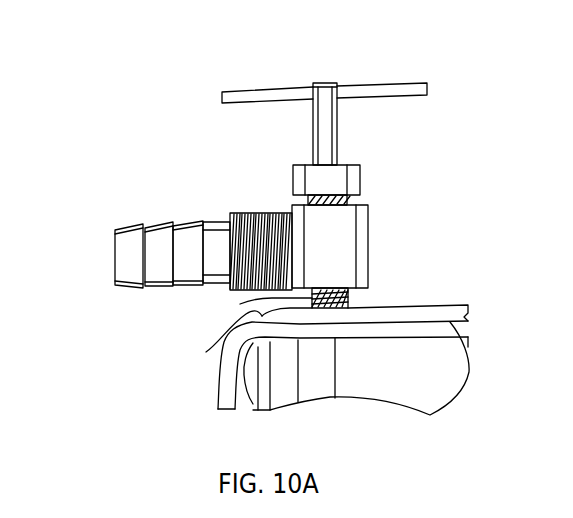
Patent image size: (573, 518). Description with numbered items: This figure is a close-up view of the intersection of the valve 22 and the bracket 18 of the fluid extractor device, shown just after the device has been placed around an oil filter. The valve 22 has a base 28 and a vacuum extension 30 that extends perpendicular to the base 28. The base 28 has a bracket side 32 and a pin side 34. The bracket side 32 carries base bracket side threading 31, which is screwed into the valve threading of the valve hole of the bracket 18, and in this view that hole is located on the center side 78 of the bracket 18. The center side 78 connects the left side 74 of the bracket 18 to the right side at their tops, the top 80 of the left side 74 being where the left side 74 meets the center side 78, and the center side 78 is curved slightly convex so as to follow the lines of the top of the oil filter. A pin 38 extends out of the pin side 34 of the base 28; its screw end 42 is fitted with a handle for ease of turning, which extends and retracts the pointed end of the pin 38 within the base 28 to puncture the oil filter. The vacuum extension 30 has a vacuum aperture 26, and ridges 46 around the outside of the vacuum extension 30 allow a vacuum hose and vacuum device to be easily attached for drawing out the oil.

The bracket 18 is at (437, 299).
The valve 22 is at (432, 125).
The vacuum aperture 26 is at (115, 265).
The base 28 is at (343, 243).
The vacuum extension 30 is at (182, 225).
The base bracket side threading 31 is at (240, 304).
The bracket side 32 is at (353, 296).
The pin side 34 is at (363, 198).
The pin 38 is at (315, 94).
The screw end 42 is at (313, 83).
The ridges 46 is at (215, 222).
The left side 74 is at (217, 400).
The center side 78 is at (470, 352).
The top 80 is at (206, 352).